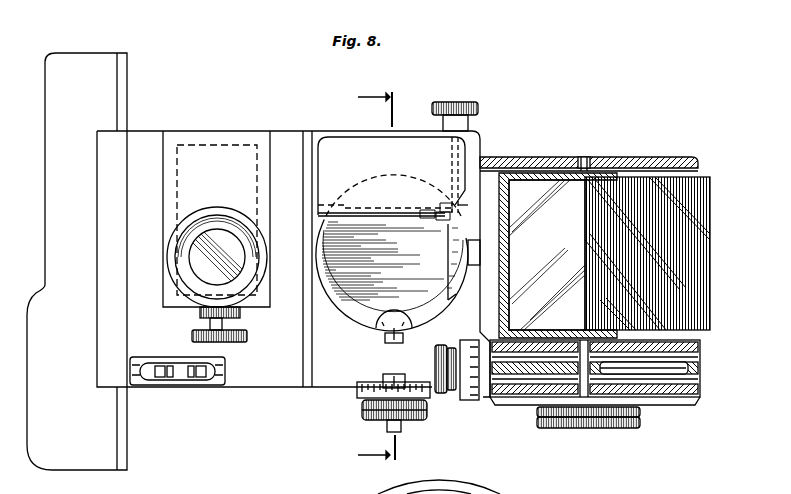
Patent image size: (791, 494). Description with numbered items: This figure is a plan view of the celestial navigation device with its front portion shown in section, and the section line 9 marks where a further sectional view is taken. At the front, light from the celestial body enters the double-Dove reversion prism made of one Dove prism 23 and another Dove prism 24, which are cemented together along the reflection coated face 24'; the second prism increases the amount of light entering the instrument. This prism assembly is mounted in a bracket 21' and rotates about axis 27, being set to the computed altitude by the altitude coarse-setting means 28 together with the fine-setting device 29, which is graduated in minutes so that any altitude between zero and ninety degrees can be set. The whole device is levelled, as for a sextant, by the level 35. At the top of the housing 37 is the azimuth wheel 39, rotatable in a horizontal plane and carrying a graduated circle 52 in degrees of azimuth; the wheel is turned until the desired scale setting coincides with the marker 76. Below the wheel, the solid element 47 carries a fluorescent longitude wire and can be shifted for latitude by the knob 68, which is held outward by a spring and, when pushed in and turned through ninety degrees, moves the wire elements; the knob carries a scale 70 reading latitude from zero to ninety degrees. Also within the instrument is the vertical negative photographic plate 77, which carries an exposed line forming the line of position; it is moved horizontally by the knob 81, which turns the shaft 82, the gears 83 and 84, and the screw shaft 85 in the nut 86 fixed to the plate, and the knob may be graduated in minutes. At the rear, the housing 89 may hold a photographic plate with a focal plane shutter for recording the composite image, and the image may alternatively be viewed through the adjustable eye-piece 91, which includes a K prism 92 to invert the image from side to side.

The section line 9— 9 is at (366, 280).
The bracket 21' is at (589, 147).
The Dove prism 23 is at (700, 255).
The Dove prism 24 is at (558, 255).
The reflection coated face 24' is at (557, 292).
The axis 27 is at (585, 160).
The altitude coarse-setting means 28 is at (596, 426).
The fine-setting device 29 is at (474, 400).
The level 35 is at (207, 388).
The housing 37 is at (338, 392).
The azimuth wheel 39 is at (378, 330).
The solid element 47 is at (466, 492).
The graduated circle 52 is at (457, 298).
The knob 68 is at (425, 410).
The scale 70 is at (363, 398).
The marker 76 is at (481, 260).
The vertical negative photographic plate 77 is at (382, 213).
The knob 81 is at (460, 104).
The shaft 82 is at (458, 172).
The gear 83 is at (468, 205).
The gear 84 is at (432, 199).
The screw shaft 85 is at (443, 220).
The nut 86 is at (422, 218).
The housing 89 is at (86, 470).
The adjustable eye-piece 91 is at (240, 257).
The K prism 92 is at (212, 145).